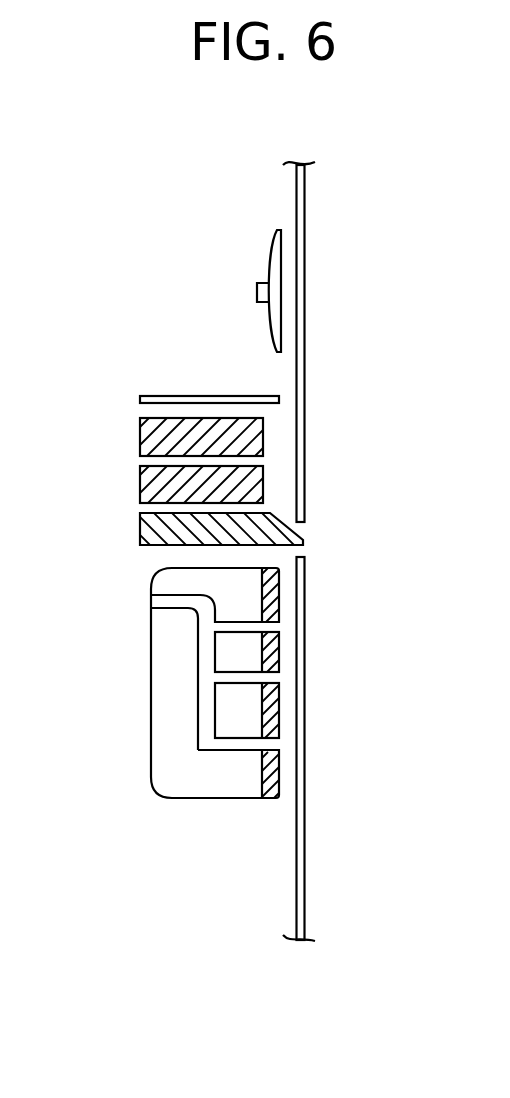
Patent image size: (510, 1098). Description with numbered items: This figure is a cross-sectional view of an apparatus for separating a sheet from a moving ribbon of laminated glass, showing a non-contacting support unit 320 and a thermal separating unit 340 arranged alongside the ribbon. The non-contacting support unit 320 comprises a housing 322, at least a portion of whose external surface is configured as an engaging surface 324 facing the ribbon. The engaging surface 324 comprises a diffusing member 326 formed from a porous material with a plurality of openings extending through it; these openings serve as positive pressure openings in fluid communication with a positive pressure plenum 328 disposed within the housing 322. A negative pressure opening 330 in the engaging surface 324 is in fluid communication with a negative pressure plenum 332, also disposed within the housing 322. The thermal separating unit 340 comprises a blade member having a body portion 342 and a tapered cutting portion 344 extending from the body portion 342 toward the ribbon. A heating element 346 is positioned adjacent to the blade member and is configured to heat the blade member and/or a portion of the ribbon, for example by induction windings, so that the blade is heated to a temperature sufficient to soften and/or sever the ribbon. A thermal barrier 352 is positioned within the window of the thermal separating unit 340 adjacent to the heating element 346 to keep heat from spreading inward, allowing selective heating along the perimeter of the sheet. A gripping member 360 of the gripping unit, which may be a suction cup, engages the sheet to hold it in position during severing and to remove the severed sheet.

The non-contacting support unit 320 is at (235, 683).
The housing 322 is at (148, 763).
The engaging surface 324 is at (277, 717).
The diffusing member 326 is at (272, 652).
The positive pressure plenum 328 is at (170, 726).
The negative pressure opening 330 is at (268, 628).
The negative pressure plenum 332 is at (205, 647).
The thermal separating unit 340 is at (209, 424).
The body portion 342 is at (152, 537).
The tapered cutting portion 344 is at (283, 523).
The heating element 346 is at (285, 445).
The thermal barrier 352 is at (195, 395).
The gripping member 360 is at (272, 290).